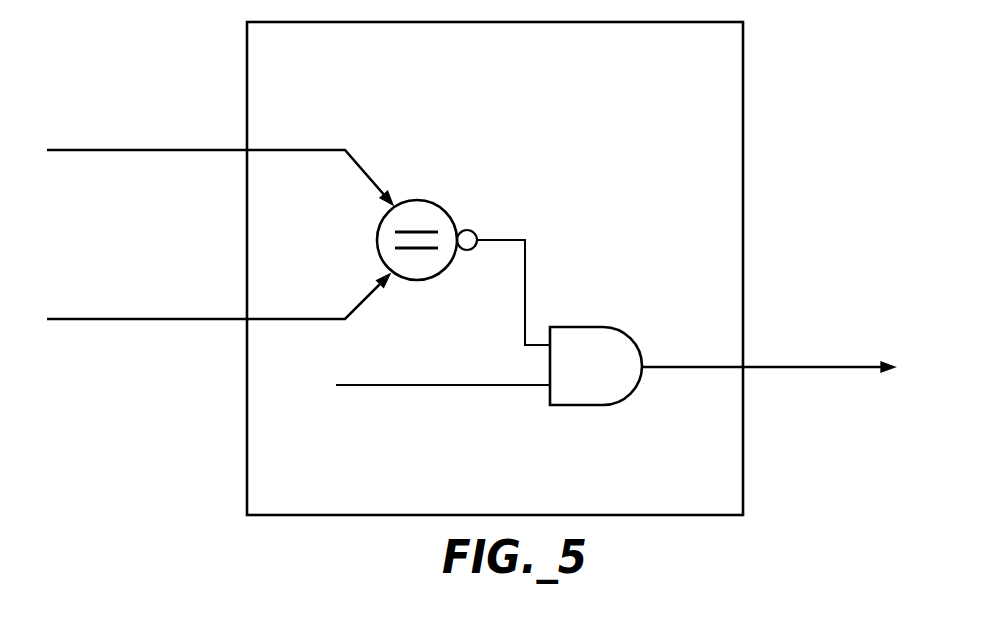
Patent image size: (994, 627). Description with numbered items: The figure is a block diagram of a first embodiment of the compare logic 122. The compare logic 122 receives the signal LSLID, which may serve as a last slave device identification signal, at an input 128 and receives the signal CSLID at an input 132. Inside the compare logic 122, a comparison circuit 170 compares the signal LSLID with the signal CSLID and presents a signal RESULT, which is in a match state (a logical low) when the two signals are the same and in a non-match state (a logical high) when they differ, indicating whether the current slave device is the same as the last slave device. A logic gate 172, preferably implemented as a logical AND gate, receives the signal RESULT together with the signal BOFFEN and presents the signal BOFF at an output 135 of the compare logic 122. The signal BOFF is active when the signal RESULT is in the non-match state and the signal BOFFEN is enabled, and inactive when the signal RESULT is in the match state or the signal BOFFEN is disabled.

The compare logic 122 is at (744, 243).
The input 128 is at (245, 153).
The input 132 is at (245, 320).
The comparison circuit 170 is at (437, 202).
The logic gate 172 is at (595, 406).
The output 135 is at (745, 370).